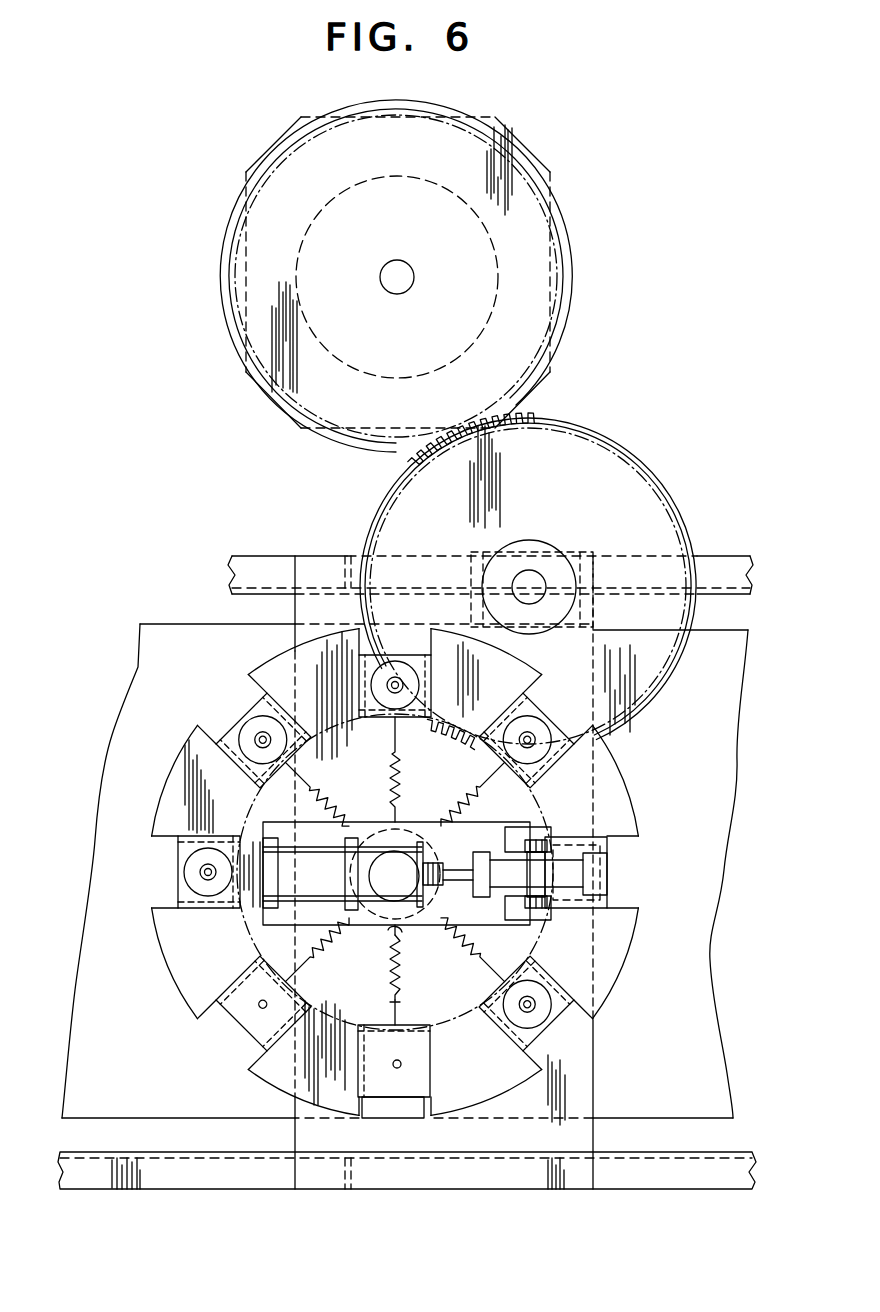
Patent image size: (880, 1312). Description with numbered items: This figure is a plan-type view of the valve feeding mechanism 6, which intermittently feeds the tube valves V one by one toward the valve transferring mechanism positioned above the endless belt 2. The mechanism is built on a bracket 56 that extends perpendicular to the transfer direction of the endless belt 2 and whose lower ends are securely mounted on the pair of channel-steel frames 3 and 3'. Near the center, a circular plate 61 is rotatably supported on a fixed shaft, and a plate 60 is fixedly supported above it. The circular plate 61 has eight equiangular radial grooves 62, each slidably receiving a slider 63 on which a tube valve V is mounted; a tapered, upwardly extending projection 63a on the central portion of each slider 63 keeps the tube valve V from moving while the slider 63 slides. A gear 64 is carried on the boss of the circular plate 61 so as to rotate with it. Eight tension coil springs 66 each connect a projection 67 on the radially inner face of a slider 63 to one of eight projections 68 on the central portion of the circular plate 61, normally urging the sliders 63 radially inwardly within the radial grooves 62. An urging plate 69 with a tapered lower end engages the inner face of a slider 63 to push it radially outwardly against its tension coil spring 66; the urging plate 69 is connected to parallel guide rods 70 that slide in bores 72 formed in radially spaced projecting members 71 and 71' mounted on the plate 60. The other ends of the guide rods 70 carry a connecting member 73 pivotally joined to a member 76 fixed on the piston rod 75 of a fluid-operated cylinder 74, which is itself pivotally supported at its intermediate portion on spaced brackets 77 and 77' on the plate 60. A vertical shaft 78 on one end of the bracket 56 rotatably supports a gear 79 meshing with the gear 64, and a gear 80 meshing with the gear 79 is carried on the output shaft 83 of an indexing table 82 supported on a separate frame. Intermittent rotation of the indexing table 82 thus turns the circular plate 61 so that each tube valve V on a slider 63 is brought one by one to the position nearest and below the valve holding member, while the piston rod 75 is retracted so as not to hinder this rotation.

The endless belt 2 is at (92, 1018).
The frame 3 is at (407, 1194).
The frame 3' is at (490, 552).
The valve feeding mechanism 6 is at (222, 1060).
The bracket 56 is at (580, 1062).
The plate 60 is at (484, 915).
The circular plate 61 is at (176, 966).
The radial groove 62 is at (372, 1120).
The slider 63 is at (420, 1085).
The projection 63a is at (402, 1064).
The gear 64 is at (530, 788).
The tension coil spring 66 is at (400, 967).
The projection 67 is at (400, 999).
The projection 68 is at (402, 944).
The urging plate 69 is at (196, 893).
The guide rod 70 is at (295, 860).
The projecting member 71 is at (278, 895).
The projecting member 71' is at (360, 900).
The bore 72 is at (300, 848).
The connecting member 73 is at (420, 900).
The fluid-operated cylinder 74 is at (590, 872).
The piston rod 75 is at (458, 866).
The member 76 is at (440, 862).
The bracket 77 is at (541, 922).
The bracket 77' is at (544, 824).
The vertical shaft 78 is at (534, 577).
The gear 79 is at (686, 520).
The gear 80 is at (574, 240).
The indexing table 82 is at (556, 182).
The output shaft 83 is at (405, 264).
The tube valve V is at (184, 872).